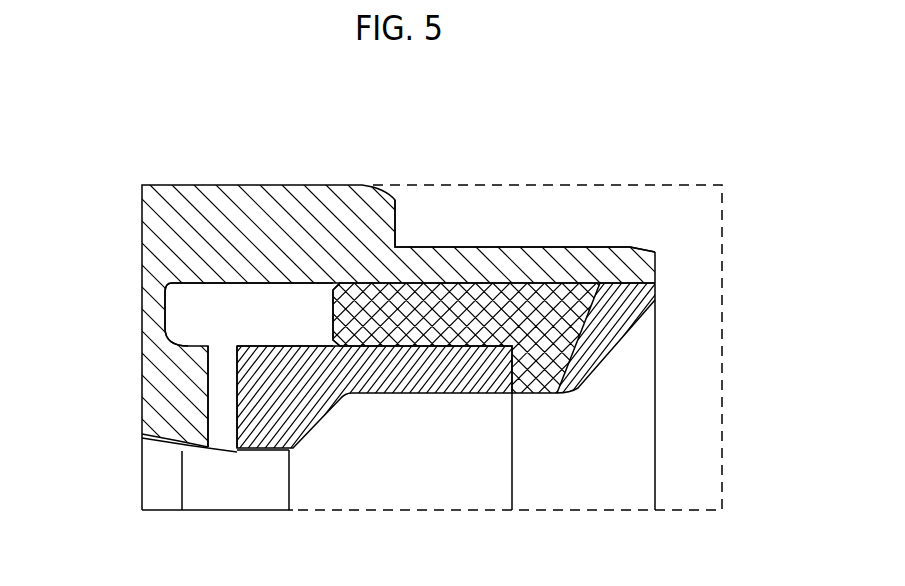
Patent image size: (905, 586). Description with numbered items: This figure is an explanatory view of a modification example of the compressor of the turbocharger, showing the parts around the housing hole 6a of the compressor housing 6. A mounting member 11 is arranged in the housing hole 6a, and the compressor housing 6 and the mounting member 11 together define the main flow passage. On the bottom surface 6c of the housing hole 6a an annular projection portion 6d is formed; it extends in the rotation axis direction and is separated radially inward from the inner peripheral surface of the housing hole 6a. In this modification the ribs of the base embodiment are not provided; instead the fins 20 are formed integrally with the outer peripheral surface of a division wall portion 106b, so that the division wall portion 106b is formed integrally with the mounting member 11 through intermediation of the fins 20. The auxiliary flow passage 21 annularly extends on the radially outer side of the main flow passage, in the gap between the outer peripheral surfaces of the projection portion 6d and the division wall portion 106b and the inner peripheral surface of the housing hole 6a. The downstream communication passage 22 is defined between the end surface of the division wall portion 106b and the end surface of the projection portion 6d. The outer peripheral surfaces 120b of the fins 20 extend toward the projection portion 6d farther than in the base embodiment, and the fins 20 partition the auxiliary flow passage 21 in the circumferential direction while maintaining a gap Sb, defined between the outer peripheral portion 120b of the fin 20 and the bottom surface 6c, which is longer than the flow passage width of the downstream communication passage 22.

The compressor housing 6 is at (167, 184).
The housing hole 6a is at (212, 288).
The bottom surface 6c is at (175, 302).
The projection portion 6d is at (194, 343).
The downstream communication passage 22 is at (220, 358).
The gap Sb is at (285, 317).
The auxiliary flow passage 21 is at (322, 317).
The outer peripheral surface of the fin 120b is at (408, 305).
The fin 20 is at (428, 305).
The division wall portion 106b is at (467, 305).
The mounting member 11 is at (655, 341).